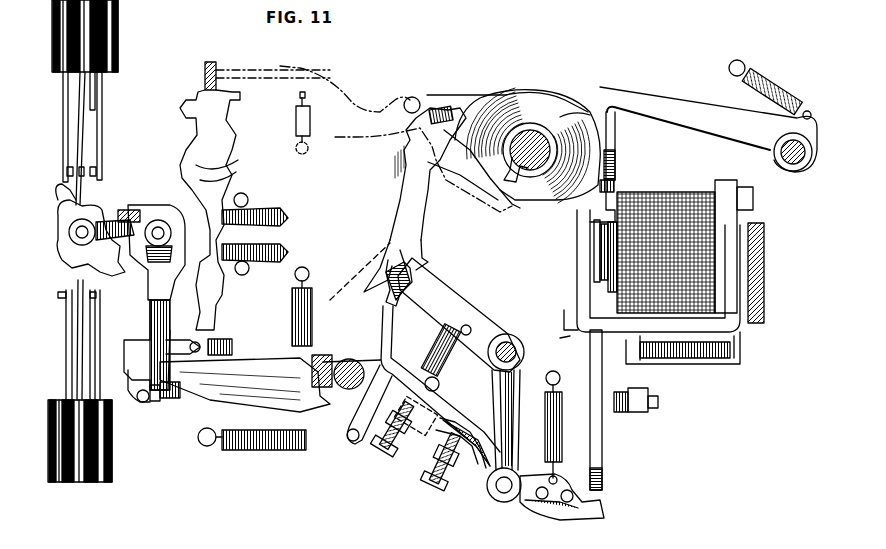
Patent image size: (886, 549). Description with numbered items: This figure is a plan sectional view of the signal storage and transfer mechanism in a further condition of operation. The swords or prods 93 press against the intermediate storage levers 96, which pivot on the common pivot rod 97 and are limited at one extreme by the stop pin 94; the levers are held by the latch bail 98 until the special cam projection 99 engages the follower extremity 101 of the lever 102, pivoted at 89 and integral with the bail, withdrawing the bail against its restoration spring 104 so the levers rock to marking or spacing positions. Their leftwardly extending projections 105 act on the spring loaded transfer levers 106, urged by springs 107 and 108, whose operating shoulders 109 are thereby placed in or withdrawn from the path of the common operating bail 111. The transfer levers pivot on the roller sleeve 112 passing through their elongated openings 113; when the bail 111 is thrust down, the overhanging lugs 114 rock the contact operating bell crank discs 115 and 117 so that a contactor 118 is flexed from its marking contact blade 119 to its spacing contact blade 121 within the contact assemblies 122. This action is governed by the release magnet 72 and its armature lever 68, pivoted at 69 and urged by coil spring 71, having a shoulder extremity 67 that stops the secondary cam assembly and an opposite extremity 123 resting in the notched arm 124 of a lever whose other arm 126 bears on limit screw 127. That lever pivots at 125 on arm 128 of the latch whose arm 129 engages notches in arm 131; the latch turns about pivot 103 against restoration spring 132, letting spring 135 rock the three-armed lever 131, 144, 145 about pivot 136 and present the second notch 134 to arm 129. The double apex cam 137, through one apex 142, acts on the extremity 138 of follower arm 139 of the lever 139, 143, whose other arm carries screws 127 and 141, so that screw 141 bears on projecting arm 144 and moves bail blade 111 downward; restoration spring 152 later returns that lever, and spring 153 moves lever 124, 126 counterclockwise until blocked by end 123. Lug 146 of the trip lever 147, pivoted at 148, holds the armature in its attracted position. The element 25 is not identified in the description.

The shaft 25 is at (534, 170).
The shoulder extremity 67 is at (615, 166).
The armature lever 68 is at (578, 270).
The pivot 69 is at (566, 333).
The coil spring 71 is at (690, 366).
The local control positive release magnet 72 is at (685, 200).
The pivot 89 is at (414, 98).
The swords 93 is at (282, 228).
The stop pin 94 is at (246, 275).
The intermediate storage lever 96 is at (225, 168).
The common pivot rod 97 is at (248, 200).
The latch bail 98 is at (206, 90).
The special cam projection 99 is at (512, 184).
The follower extremity 101 is at (484, 196).
The lever 102 is at (354, 132).
The pivot 103 is at (512, 342).
The restoration spring 104 is at (296, 112).
The leftwardly extending projections 105 is at (186, 338).
The transfer lever 106 is at (150, 304).
The spring 107 is at (234, 344).
The spring 108 is at (165, 400).
The operating shoulder 109 is at (145, 404).
The common operating bail 111 is at (173, 399).
The roller sleeve 112 is at (132, 208).
The elongated openings 113 is at (150, 206).
The overhanging lugs 114 is at (112, 218).
The contact operating bell crank disc 115 is at (64, 190).
The contact operating bell crank disc 117 is at (100, 195).
The contactor 118 is at (86, 128).
The marking contact blade 119 is at (64, 142).
The spacing contact blade 121 is at (103, 93).
The contact assemblies 122 is at (82, 484).
The opposite extremity 123 is at (602, 478).
The notched arm 124 is at (566, 518).
The pivot 125 is at (495, 497).
The lever arm 126 is at (476, 435).
The limit screw 127 is at (437, 492).
The lever arm 128 is at (510, 434).
The lever arm 129 is at (440, 290).
The arm 131 is at (392, 304).
The restoration spring 132 is at (458, 356).
The second notch 134 is at (408, 259).
The spring 135 is at (310, 300).
The pivot 136 is at (388, 360).
The double apex cam 137 is at (498, 112).
The follower extremity 138 is at (440, 100).
The follower arm 139 is at (392, 266).
The limit screw 141 is at (384, 450).
The apex 142 is at (450, 108).
The lever arm 143 is at (424, 440).
The projecting arm 144 is at (424, 380).
The transfer bail carrying arm 145 is at (218, 384).
The lug 146 is at (606, 131).
The trip lever 147 is at (640, 104).
The pivot 148 is at (792, 174).
The restoration spring 152 is at (252, 450).
The spring 153 is at (564, 444).